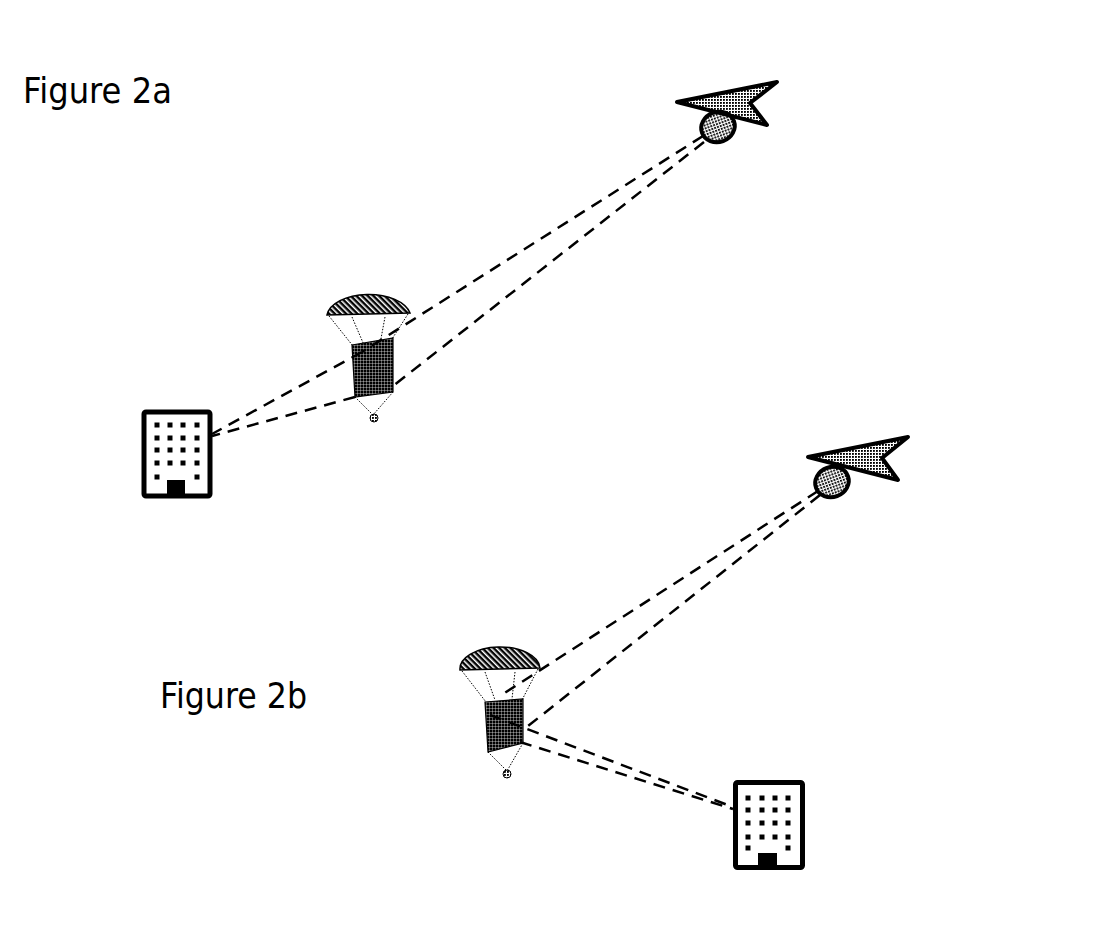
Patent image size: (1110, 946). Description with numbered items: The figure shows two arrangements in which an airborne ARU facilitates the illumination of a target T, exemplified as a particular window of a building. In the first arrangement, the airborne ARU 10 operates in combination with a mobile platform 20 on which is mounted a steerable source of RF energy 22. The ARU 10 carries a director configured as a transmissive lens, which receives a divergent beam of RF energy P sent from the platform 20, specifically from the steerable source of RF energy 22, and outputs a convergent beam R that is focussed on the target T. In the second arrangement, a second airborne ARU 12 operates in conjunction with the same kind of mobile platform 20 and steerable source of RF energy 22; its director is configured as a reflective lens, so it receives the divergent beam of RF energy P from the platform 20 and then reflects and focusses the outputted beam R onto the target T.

In FIG. 2A, the airborne ARU 10 is at (397, 257).
In FIG. 2B, the second airborne ARU 12 is at (522, 612).
In FIG. 2A, the mobile platform 20 is at (728, 102).
In FIG. 2B, the mobile platform 20 is at (850, 455).
In FIG. 2A, the steerable source of RF energy 22 is at (725, 135).
In FIG. 2B, the steerable source of RF energy 22 is at (838, 487).
In FIG. 2A, the target T is at (195, 438).
In FIG. 2B, the target T is at (750, 808).
In FIG. 2A, the divergent beam of RF energy P is at (533, 261).
In FIG. 2B, the divergent beam of RF energy P is at (660, 610).
In FIG. 2A, the convergent beam R is at (287, 394).
In FIG. 2B, the convergent beam R is at (611, 762).